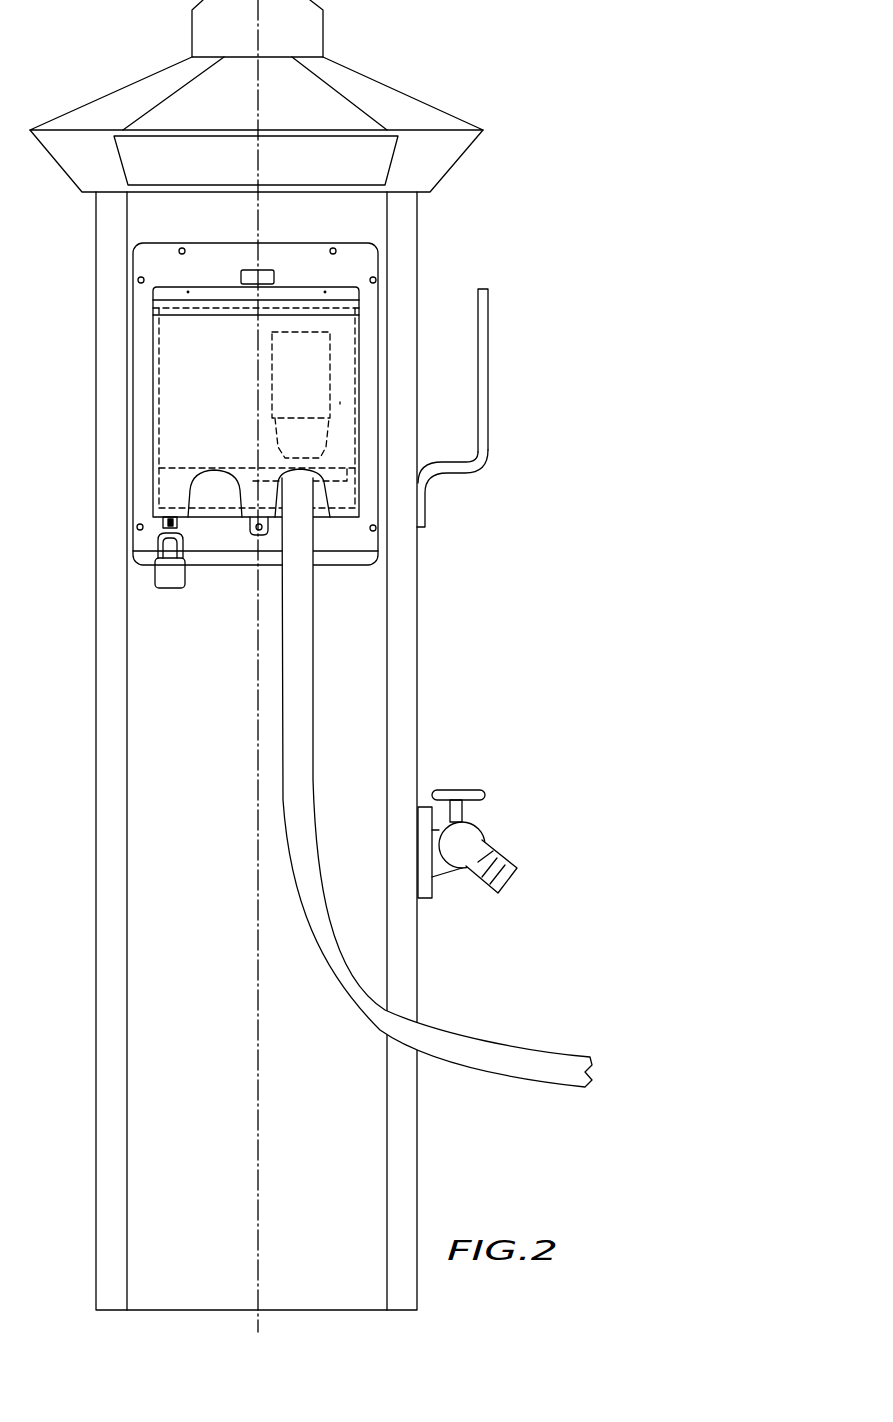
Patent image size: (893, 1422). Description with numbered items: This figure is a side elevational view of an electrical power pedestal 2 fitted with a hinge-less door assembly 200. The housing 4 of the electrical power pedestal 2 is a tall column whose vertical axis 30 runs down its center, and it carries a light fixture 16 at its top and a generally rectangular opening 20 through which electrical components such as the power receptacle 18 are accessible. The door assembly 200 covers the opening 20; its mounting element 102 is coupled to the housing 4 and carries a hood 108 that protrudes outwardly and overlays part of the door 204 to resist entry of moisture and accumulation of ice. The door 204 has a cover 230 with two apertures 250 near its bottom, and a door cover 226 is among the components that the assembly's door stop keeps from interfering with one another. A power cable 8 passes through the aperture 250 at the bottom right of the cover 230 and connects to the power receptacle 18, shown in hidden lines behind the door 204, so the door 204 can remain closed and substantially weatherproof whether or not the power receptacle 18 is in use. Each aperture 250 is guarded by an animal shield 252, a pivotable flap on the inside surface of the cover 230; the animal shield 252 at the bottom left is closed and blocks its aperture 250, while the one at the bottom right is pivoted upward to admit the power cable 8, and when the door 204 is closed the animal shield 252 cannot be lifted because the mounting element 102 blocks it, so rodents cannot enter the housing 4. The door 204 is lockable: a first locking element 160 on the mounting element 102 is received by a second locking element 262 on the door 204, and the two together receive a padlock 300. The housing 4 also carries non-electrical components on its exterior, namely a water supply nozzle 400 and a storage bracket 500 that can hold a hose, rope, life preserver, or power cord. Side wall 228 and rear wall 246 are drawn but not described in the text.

The electrical power pedestal 2 is at (71, 939).
The housing 4 is at (140, 1080).
The power cable 8 is at (300, 617).
The light fixture 16 is at (202, 147).
The power receptacle 18 is at (265, 353).
The opening 20 is at (348, 345).
The vertical axis 30 is at (260, 30).
The mounting element 102 is at (295, 265).
The hood 108 is at (322, 290).
The first locking element 160 is at (158, 540).
The door assembly 200 is at (125, 292).
The door 204 is at (167, 342).
The door cover 226 is at (358, 488).
The side wall 228 is at (153, 407).
The cover 230 is at (209, 387).
The rear wall 246 is at (340, 402).
The aperture 250 is at (267, 493).
The animal shield 252 is at (342, 480).
The second locking element 262 is at (177, 523).
The padlock 300 is at (166, 590).
The water supply nozzle 400 is at (465, 842).
The storage bracket 500 is at (488, 313).